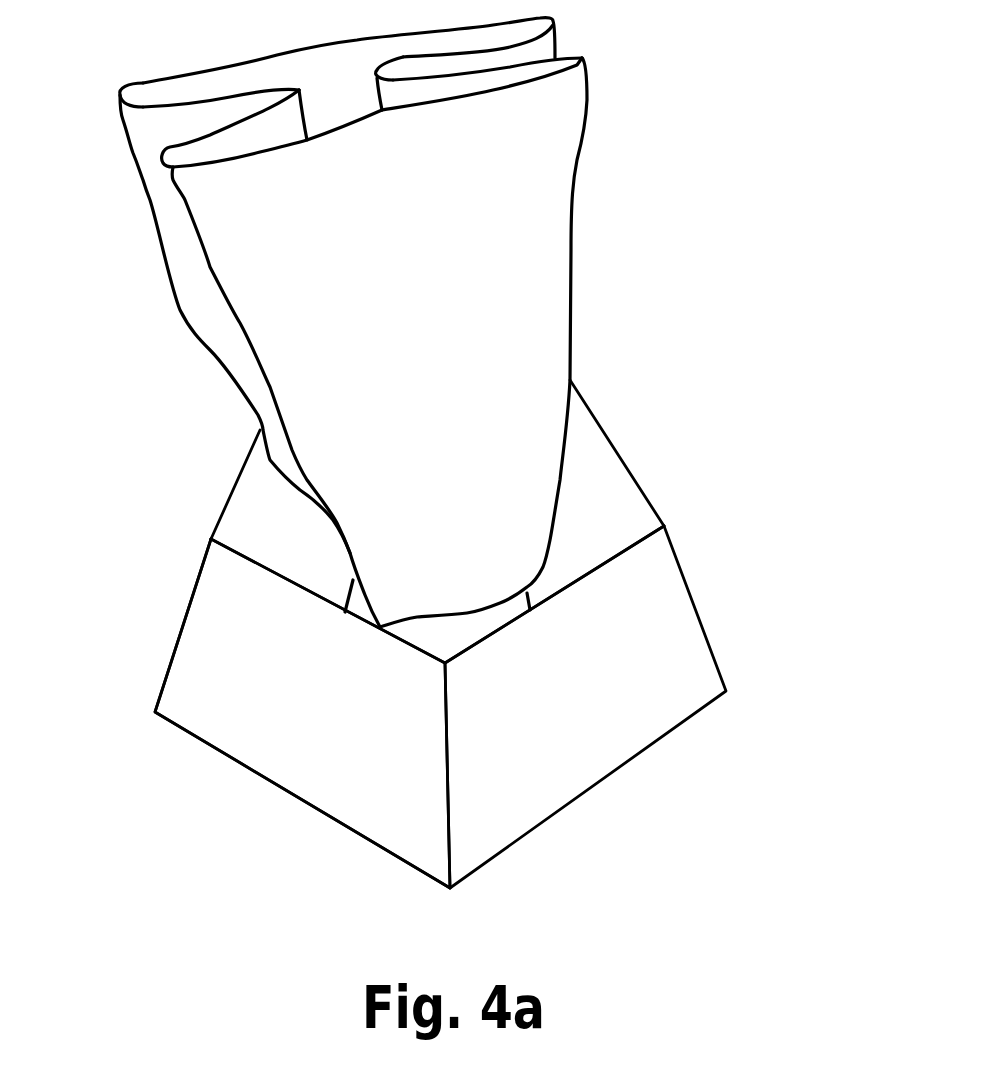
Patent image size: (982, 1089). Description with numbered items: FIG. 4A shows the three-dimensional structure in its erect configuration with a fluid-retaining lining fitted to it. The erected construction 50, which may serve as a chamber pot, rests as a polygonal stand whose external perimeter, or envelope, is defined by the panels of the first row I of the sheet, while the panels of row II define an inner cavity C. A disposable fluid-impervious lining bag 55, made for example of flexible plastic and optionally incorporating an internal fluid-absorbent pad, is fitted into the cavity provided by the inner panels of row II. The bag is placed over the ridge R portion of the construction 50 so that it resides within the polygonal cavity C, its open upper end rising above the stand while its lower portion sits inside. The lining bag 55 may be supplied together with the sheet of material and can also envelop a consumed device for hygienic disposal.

The lining bag 55 is at (478, 200).
The construction 50 is at (686, 438).
The ridge R is at (610, 437).
The inner cavity C is at (443, 637).
The first row I is at (227, 652).
The row II is at (255, 533).